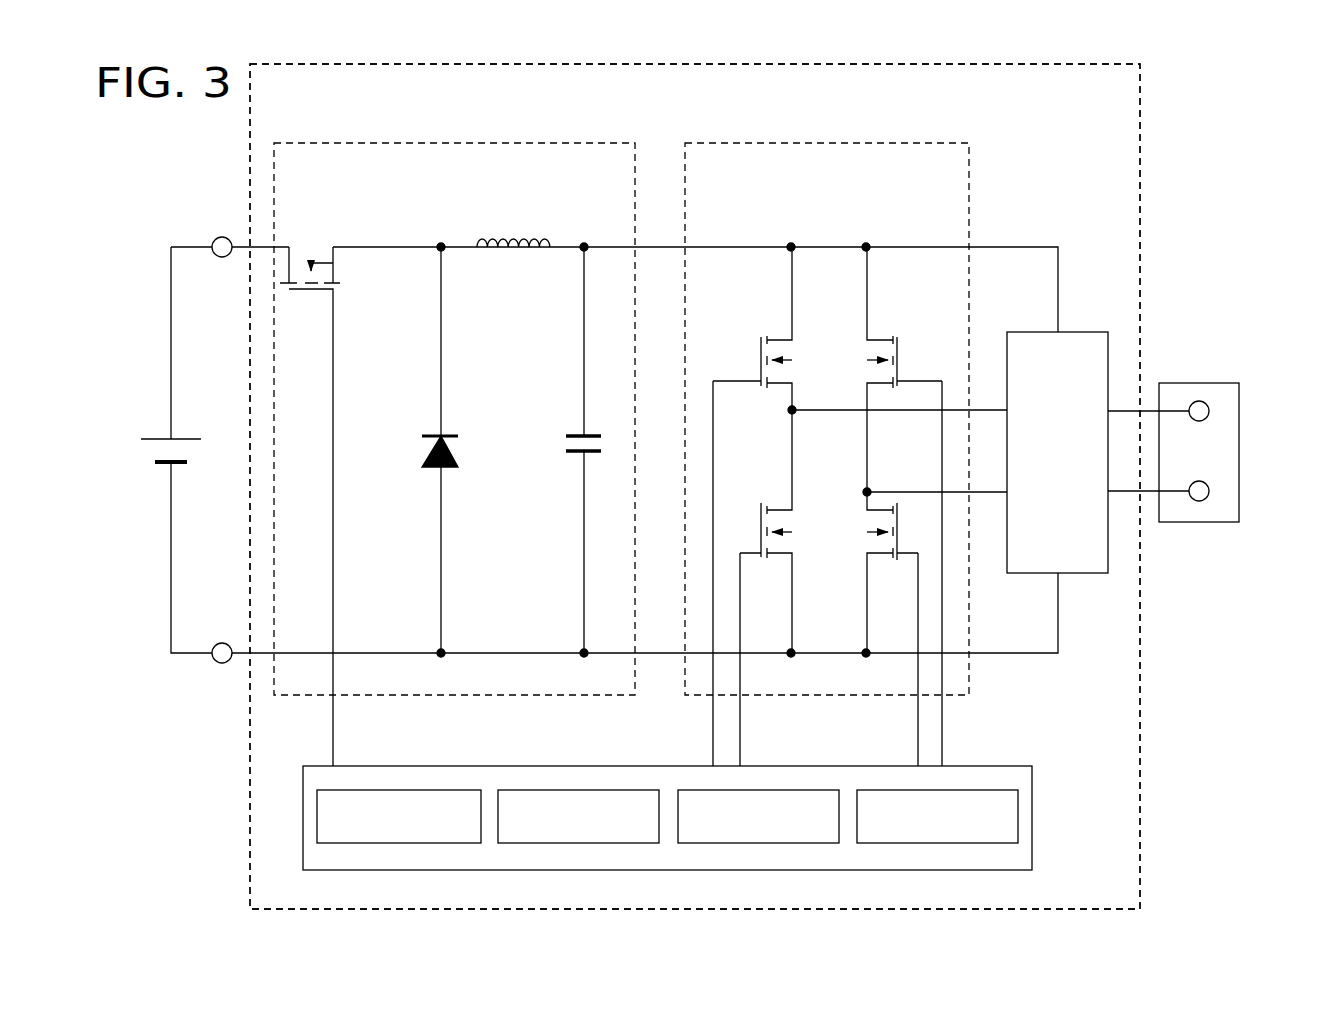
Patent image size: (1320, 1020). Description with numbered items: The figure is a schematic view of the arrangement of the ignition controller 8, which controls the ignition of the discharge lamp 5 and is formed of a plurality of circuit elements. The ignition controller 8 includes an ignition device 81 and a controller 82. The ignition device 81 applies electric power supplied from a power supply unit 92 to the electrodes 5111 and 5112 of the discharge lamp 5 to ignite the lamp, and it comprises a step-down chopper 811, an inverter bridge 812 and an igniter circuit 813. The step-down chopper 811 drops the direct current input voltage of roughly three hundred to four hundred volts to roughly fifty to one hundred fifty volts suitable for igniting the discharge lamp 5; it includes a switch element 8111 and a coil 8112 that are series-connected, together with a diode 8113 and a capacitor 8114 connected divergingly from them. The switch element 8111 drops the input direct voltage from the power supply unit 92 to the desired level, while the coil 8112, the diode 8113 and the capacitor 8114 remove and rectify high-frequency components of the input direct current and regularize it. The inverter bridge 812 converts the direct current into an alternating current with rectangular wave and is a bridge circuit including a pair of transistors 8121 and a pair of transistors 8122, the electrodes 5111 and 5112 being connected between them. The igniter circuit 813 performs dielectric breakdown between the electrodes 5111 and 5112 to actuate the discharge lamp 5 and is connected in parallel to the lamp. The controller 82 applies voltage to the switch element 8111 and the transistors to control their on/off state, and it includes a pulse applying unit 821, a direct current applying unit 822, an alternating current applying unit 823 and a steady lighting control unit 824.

The ignition controller 8 is at (1141, 130).
The ignition device 81 is at (1068, 142).
The step-down chopper 811 is at (566, 143).
The switch element 8111 is at (340, 225).
The coil 8112 is at (521, 227).
The diode 8113 is at (426, 427).
The capacitor 8114 is at (573, 427).
The inverter bridge 812 is at (899, 143).
The transistors 8121 is at (752, 323).
The transistors 8122 is at (907, 323).
The igniter circuit 813 is at (1081, 332).
The controller 82 is at (985, 766).
The pulse applying unit 821 is at (395, 843).
The direct current applying unit 822 is at (575, 843).
The alternating current applying unit 823 is at (755, 843).
The steady lighting control unit 824 is at (934, 843).
The discharge lamp 5 is at (1202, 383).
The electrode 5111 is at (1209, 411).
The electrode 5112 is at (1209, 491).
The power supply unit 92 is at (158, 428).